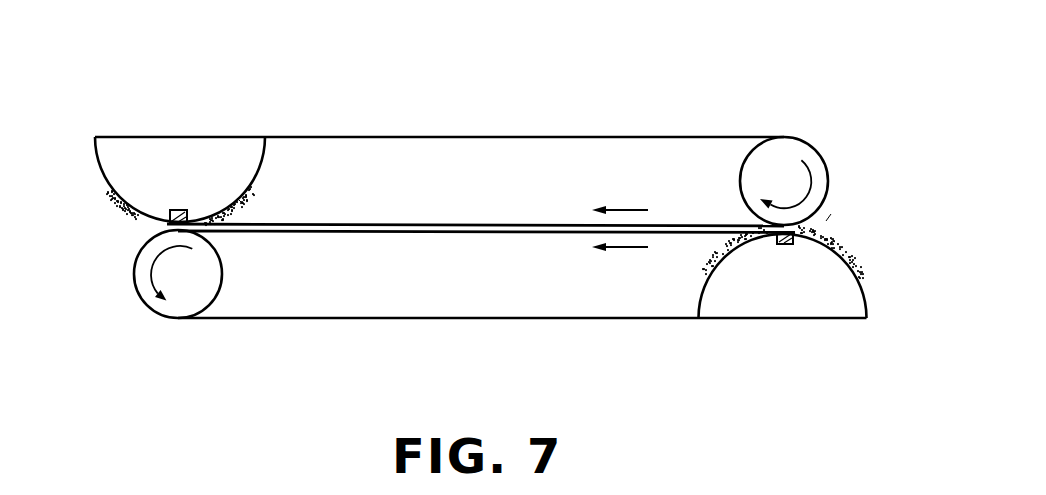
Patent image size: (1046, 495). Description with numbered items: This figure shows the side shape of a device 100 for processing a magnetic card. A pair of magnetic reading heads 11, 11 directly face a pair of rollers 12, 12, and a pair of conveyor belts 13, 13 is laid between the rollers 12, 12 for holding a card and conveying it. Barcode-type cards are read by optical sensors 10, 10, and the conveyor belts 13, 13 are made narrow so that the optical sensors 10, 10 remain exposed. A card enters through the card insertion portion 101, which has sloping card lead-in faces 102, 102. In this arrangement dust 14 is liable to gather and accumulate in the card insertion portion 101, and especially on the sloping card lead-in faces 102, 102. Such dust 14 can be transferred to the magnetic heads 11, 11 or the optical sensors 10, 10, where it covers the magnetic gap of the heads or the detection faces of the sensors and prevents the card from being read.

The continuous belt apparatus 100 is at (576, 39).
The optical sensor 10 is at (178, 210).
The magnetic reading head 11 is at (263, 160).
The roller 12 is at (168, 308).
The conveyor belt 13 is at (438, 224).
The dust 14 is at (128, 214).
The card insertion portion 101 is at (836, 209).
The sloping card lead-in face 102 is at (240, 203).